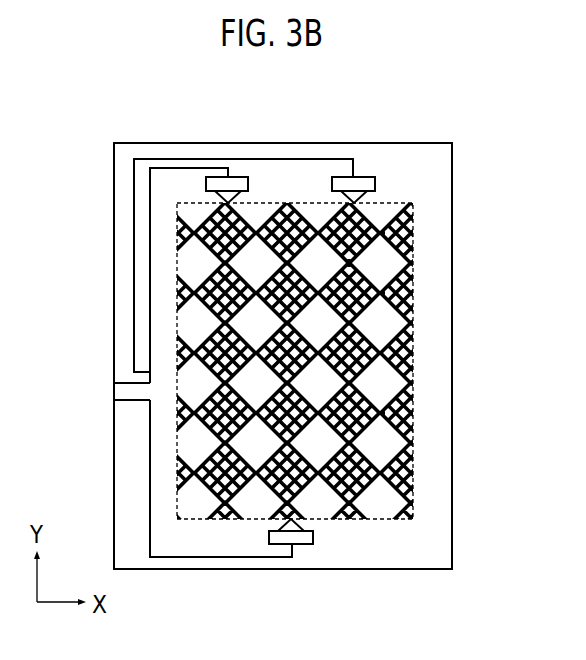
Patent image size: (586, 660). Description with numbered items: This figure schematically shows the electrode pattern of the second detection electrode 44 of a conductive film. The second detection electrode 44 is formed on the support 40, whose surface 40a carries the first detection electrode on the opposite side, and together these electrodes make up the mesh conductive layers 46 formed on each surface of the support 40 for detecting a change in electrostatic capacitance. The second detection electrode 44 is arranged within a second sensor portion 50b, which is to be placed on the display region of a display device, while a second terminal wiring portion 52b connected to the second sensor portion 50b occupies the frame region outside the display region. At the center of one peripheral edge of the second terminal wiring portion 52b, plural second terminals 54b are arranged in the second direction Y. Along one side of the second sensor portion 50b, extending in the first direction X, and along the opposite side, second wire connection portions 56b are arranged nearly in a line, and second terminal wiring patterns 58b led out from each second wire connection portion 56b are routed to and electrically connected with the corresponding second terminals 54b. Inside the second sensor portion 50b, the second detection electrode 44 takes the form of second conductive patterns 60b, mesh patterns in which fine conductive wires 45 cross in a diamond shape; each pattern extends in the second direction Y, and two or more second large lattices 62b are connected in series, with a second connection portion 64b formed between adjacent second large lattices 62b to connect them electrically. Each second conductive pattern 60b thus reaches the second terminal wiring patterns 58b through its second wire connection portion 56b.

The support 40 is at (453, 161).
The surface of the support 40a is at (422, 160).
The second detection electrode 44 is at (312, 401).
The fine conductive wires 45 is at (410, 413).
The mesh conductive layer 46 is at (424, 463).
The second sensor portion 50b is at (421, 372).
The second terminal wiring portion 52b is at (121, 254).
The second terminals 54b is at (98, 367).
The second wire connection portions 56b is at (237, 182).
The second terminal wiring patterns 58b is at (149, 340).
The second conductive patterns 60b is at (408, 474).
The second large lattices 62b is at (381, 229).
The second connection portion 64b is at (353, 262).